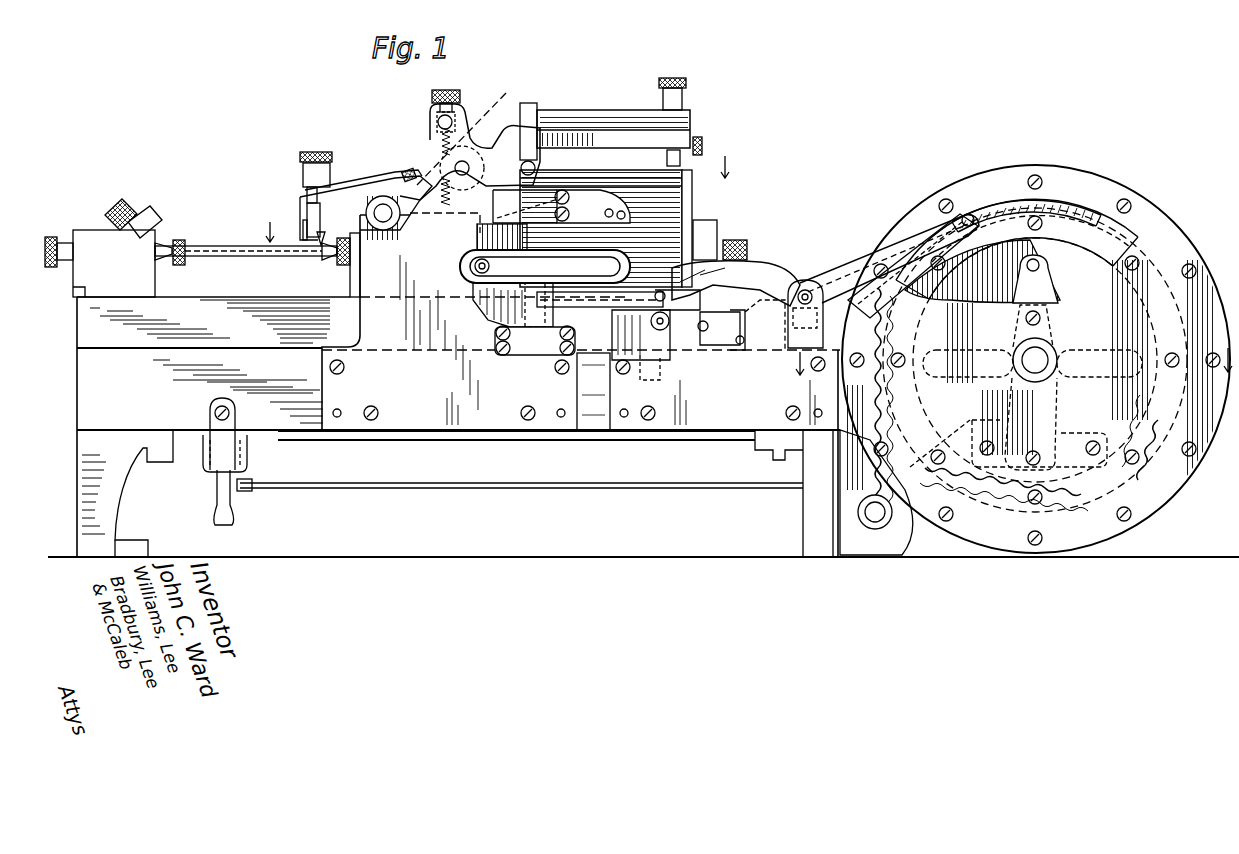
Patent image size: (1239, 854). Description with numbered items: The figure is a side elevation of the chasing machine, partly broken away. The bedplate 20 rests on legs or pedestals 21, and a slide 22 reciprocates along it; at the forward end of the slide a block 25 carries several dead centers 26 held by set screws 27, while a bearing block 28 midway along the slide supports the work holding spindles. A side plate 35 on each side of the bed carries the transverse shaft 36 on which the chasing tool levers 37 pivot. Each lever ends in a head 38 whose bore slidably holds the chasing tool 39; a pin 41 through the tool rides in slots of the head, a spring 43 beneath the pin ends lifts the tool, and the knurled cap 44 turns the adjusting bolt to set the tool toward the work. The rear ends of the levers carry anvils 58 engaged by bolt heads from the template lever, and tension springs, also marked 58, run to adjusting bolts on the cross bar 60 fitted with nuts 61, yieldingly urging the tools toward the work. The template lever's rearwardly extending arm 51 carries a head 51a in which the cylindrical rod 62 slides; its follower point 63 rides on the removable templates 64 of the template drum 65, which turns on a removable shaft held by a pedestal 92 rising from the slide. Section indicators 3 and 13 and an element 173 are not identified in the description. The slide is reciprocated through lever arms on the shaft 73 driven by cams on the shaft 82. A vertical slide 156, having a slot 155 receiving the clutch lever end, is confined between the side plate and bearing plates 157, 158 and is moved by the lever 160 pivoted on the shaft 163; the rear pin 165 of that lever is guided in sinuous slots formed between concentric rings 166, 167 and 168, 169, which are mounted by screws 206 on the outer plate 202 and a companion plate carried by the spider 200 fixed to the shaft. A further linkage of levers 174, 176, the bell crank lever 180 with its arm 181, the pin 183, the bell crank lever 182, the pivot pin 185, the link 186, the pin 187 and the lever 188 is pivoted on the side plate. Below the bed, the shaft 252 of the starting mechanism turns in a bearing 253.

The section line 3 is at (495, 190).
The section line 13 is at (1226, 348).
The bedplate 20 is at (77, 383).
The legs or pedestals 21 is at (100, 525).
The slide 22 is at (268, 297).
The block 25 is at (100, 263).
The dead centers 26 is at (166, 243).
The set screws 27 is at (133, 206).
The bearing block 28 is at (350, 278).
The side plate 35 is at (492, 420).
The shaft 36 is at (385, 196).
The chasing tool levers 37 is at (352, 192).
The head 38 is at (307, 212).
The chasing tool 39 is at (314, 238).
The pin 41 is at (303, 176).
The spring 43 is at (340, 185).
The cap 44 is at (316, 152).
The rearwardly extending arm 51 is at (570, 128).
The head 51a is at (686, 128).
The anvils 58 is at (458, 145).
The cross bar 60 is at (463, 112).
The nuts 61 is at (447, 90).
The cylindrical rod 62 is at (667, 158).
The follower point 63 is at (690, 180).
The removable templates 64 is at (705, 230).
The template drum 65 is at (659, 208).
The shaft 73 is at (870, 522).
The shaft 82 is at (1048, 352).
The pedestal 92 is at (747, 250).
The slot 155 is at (485, 288).
The slide 156 is at (462, 256).
The bearing plate 157 is at (494, 202).
The bearing plate 158 is at (505, 356).
The lever 160 is at (772, 268).
The shaft 163 is at (809, 289).
The pin 165 is at (968, 214).
The concentric ring 166 is at (1042, 200).
The concentric ring 167 is at (985, 228).
The concentric ring 168 is at (1100, 218).
The concentric ring 169 is at (1138, 215).
The link 173 is at (845, 278).
The lever 174 is at (760, 352).
The lever 176 is at (722, 350).
The bell crank lever 180 is at (758, 305).
The arm 181 is at (700, 345).
The bell crank lever 182 is at (648, 376).
The pin 183 is at (678, 299).
The pivot pin 185 is at (656, 326).
The link 186 is at (562, 360).
The pin 187 is at (518, 239).
The lever 188 is at (490, 322).
The spider 200 is at (1048, 280).
The outer plate 202 is at (962, 530).
The screws 206 is at (1200, 366).
The shaft 252 is at (208, 470).
The bearing 253 is at (248, 455).